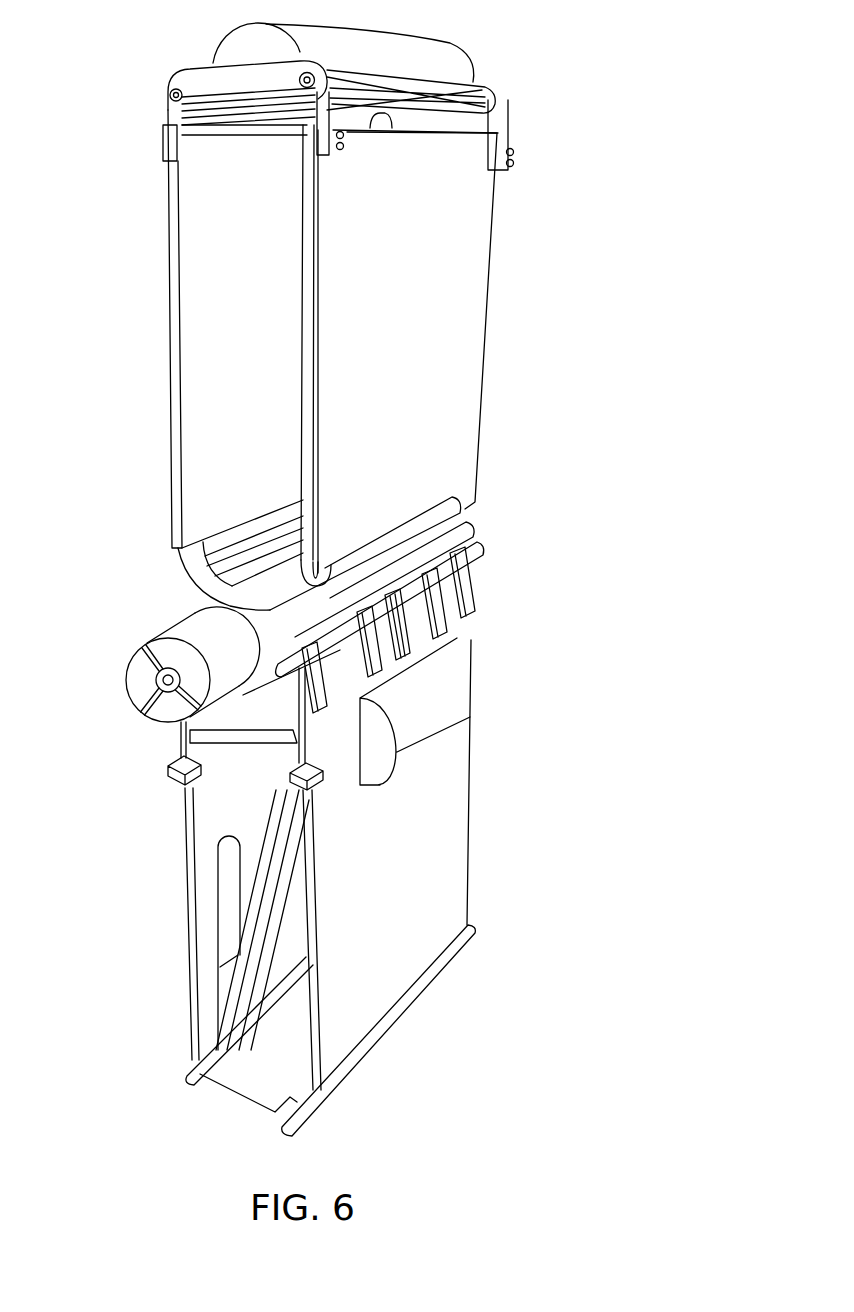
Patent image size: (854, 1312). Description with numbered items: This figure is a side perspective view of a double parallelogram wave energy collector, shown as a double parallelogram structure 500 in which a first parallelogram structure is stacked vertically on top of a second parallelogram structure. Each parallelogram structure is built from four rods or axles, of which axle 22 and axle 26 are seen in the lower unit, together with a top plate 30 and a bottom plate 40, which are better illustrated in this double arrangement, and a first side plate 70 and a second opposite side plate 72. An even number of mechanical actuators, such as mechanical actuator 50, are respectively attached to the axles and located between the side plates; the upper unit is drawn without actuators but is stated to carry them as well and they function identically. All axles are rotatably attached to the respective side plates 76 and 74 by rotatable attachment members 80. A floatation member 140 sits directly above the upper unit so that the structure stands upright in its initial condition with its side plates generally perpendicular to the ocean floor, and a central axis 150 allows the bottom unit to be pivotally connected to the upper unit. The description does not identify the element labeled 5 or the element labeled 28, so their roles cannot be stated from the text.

The double parallelogram structure 500 is at (92, 494).
The floatation member 140 is at (392, 38).
The strings 5 is at (245, 90).
The rotatable attachment members 80 is at (158, 124).
The top plate 30 is at (205, 130).
The side plate 76 is at (190, 413).
The side plate 74 is at (465, 396).
The central axis 150 is at (128, 683).
The bottom plate 40 is at (233, 587).
The rod 28 is at (287, 672).
The second opposite side plate 72 is at (460, 797).
The first side plate 70 is at (216, 828).
The mechanical actuator 50 is at (253, 912).
The rod or axle 22 is at (185, 1078).
The rod or axle 26 is at (280, 1130).